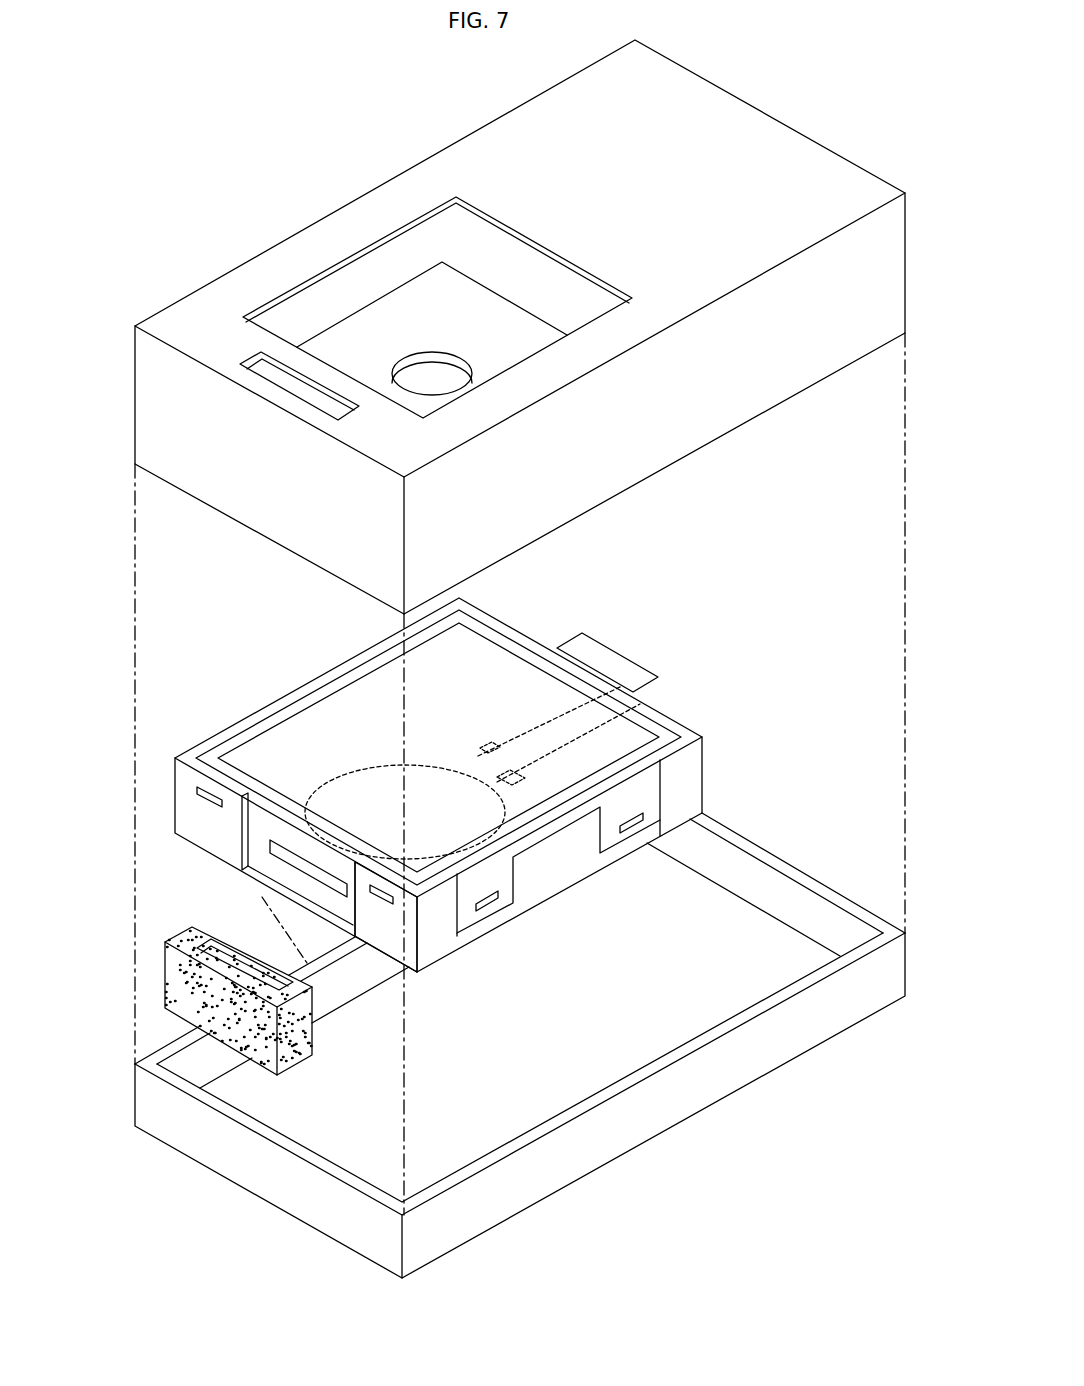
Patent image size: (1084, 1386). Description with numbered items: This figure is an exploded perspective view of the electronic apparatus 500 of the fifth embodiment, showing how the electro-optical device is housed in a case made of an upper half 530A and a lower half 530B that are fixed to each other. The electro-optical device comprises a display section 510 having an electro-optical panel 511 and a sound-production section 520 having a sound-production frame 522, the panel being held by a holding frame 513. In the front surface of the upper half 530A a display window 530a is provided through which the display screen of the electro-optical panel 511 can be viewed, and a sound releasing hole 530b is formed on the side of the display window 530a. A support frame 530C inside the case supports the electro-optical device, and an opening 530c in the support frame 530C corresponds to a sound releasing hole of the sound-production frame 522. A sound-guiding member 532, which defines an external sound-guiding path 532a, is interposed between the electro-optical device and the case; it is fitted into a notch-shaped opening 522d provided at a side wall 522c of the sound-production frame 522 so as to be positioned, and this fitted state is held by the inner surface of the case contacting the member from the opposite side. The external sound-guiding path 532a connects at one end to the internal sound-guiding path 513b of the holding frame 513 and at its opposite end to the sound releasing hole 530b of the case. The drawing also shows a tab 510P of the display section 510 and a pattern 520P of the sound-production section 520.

The electronic device 500 is at (781, 21).
The upper half 530A is at (352, 218).
The display window 530a is at (534, 237).
The support frame 530C is at (537, 313).
The sound releasing hole 530b is at (252, 362).
The opening 530c is at (425, 358).
The display section 510 is at (300, 680).
The electro-optical panel 511 is at (498, 665).
The tab 510P is at (620, 655).
The connector pattern 520P is at (630, 707).
The notch-shaped opening 522d is at (333, 868).
The internal sound-guiding path 513b is at (278, 852).
The holding frame 513 is at (680, 723).
The sound-production frame 522 is at (447, 947).
The side wall 522c is at (385, 935).
The sound-production section 520 is at (600, 882).
The sound-guiding member 532 is at (222, 1038).
The external sound-guiding path 532a is at (218, 942).
The lower half 530B is at (732, 1062).